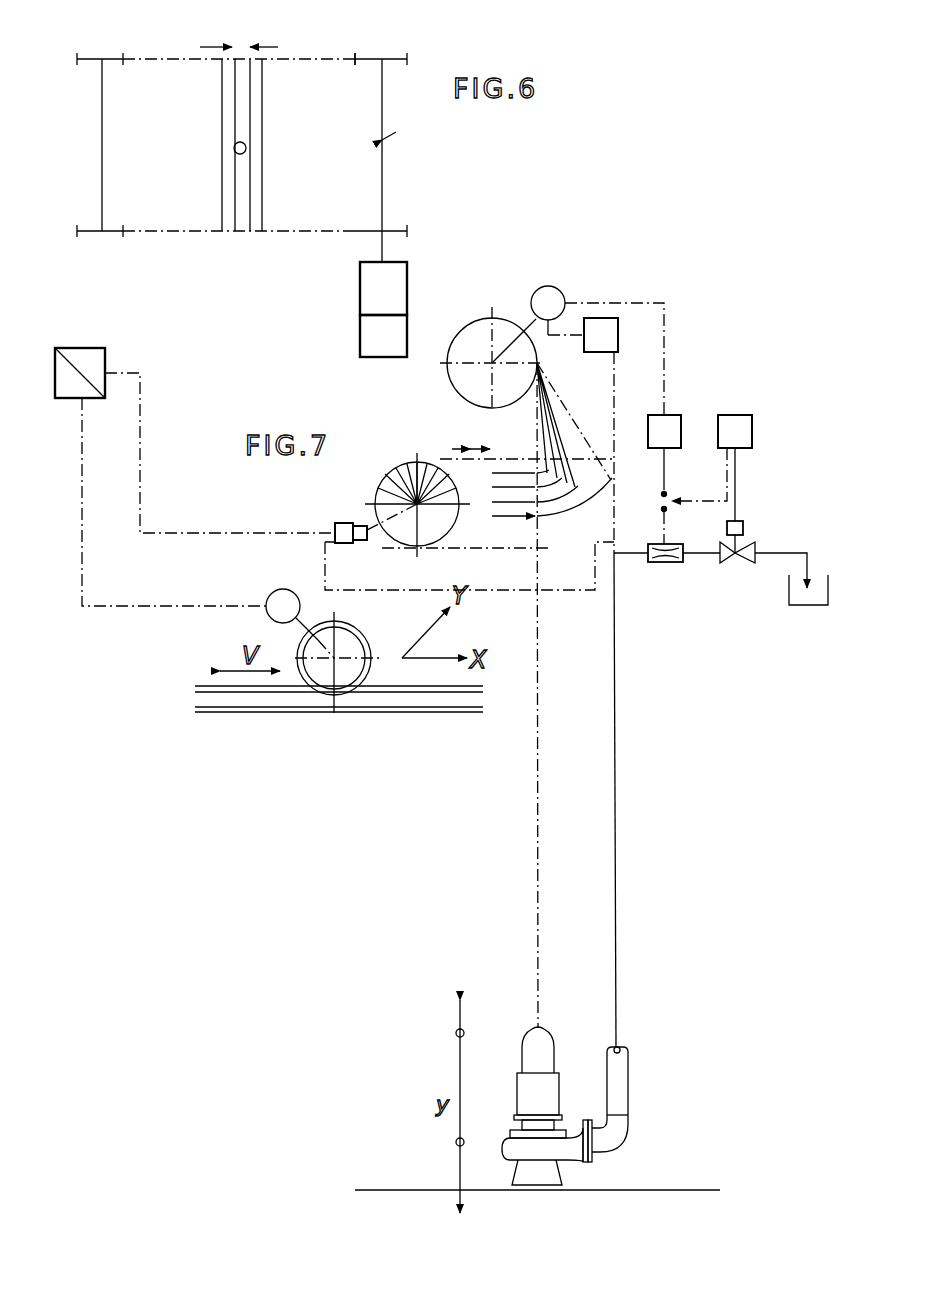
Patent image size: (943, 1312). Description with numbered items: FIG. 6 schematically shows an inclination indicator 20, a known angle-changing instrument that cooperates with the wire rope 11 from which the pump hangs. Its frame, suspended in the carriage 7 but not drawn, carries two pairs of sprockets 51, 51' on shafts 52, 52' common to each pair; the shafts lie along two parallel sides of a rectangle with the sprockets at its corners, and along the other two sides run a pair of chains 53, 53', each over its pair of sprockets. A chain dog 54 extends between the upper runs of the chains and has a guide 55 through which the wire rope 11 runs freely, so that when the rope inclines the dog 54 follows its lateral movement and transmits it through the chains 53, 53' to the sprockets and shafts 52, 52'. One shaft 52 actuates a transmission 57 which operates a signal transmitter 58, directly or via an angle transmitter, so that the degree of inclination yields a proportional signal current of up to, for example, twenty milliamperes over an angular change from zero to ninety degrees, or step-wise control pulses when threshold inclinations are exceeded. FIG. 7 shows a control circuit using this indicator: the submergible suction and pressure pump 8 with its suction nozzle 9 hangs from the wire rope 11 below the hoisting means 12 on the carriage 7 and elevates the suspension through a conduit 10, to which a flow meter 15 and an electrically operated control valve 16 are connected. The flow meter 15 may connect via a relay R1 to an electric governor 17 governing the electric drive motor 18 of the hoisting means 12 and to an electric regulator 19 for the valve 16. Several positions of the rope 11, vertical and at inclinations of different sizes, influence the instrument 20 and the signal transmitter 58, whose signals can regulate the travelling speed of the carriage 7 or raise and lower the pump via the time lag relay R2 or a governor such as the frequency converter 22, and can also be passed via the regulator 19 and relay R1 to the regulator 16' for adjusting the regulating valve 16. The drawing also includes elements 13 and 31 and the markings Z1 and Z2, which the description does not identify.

In FIG. 7, the travelling crane carriage 7 is at (352, 634).
In FIG. 7, the submergible suction and pressure pump 8 is at (545, 1096).
In FIG. 7, the suction nozzle 9 is at (504, 1150).
In FIG. 7, the conduit 10 is at (628, 1070).
In FIG. 6, the wire rope 11 is at (234, 151).
In FIG. 7, the wire rope 11 is at (538, 859).
In FIG. 7, the hoisting means 12 is at (492, 322).
In FIG. 7, the tank 13 is at (820, 606).
In FIG. 7, the flow meter 15 is at (668, 562).
In FIG. 7, the control valve 16 is at (763, 568).
In FIG. 7, the regulator 16' is at (758, 518).
In FIG. 7, the electric governor 17 is at (668, 428).
In FIG. 7, the electric drive motor 18 is at (553, 288).
In FIG. 7, the electric regulator 19 is at (734, 425).
In FIG. 6, the inclination indicator 20 is at (396, 132).
In FIG. 7, the inclination indicator 20 is at (470, 466).
In FIG. 7, the frequency converter 22 is at (96, 360).
In FIG. 7, the drive 31 is at (282, 590).
In FIG. 6, the sprockets 51 is at (404, 139).
In FIG. 7, the sprockets 51 is at (448, 566).
In FIG. 6, the sprockets 51' is at (121, 148).
In FIG. 6, the shaft 52 is at (415, 160).
In FIG. 6, the shaft 52' is at (133, 145).
In FIG. 6, the chain 53 is at (239, 40).
In FIG. 6, the chain 53' is at (239, 210).
In FIG. 6, the chain dog 54 is at (240, 86).
In FIG. 6, the guide 55 is at (250, 178).
In FIG. 6, the transmission 57 is at (360, 282).
In FIG. 7, the transmission 57 is at (360, 540).
In FIG. 6, the signal transmitter 58 is at (360, 332).
In FIG. 7, the signal transmitter 58 is at (343, 543).
In FIG. 7, the relay R1 is at (666, 494).
In FIG. 7, the time lag relay R2 is at (618, 340).
In FIG. 7, the upper position Z1 is at (456, 1035).
In FIG. 7, the lower position Z2 is at (456, 1146).